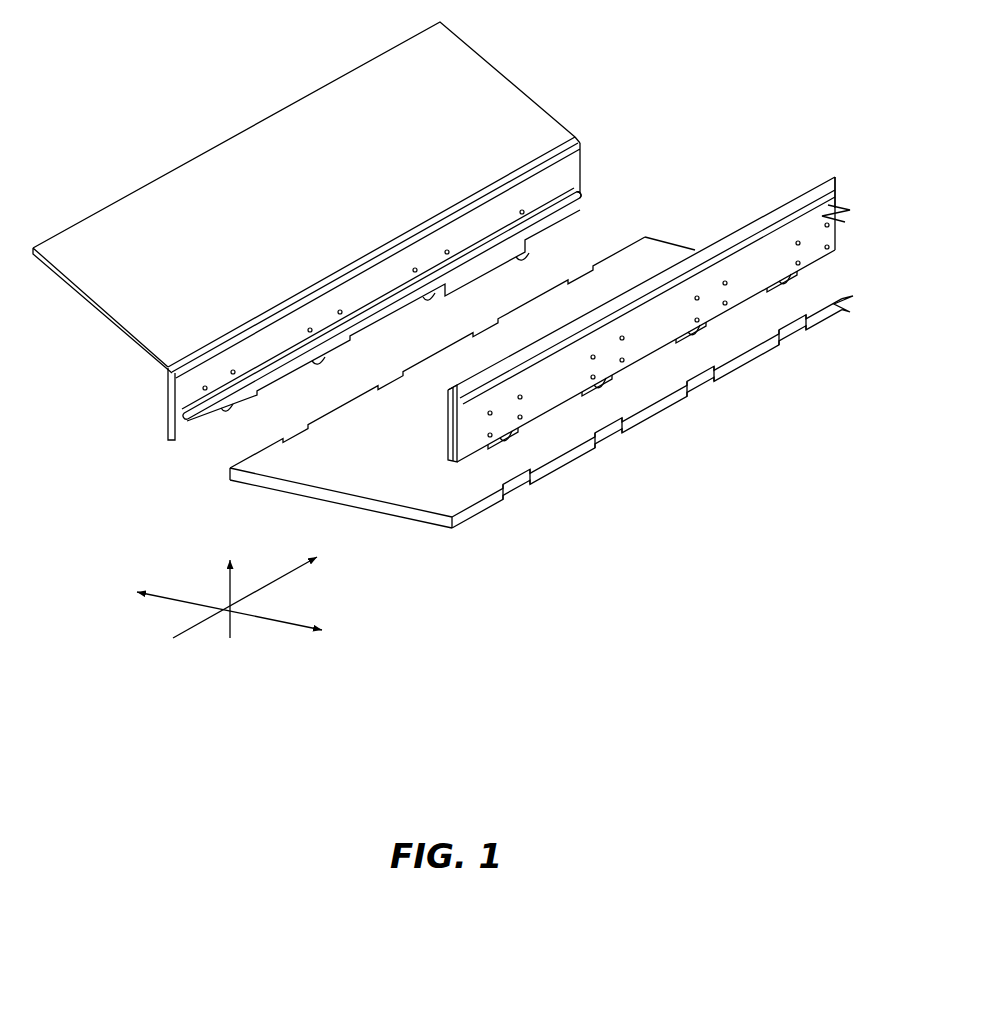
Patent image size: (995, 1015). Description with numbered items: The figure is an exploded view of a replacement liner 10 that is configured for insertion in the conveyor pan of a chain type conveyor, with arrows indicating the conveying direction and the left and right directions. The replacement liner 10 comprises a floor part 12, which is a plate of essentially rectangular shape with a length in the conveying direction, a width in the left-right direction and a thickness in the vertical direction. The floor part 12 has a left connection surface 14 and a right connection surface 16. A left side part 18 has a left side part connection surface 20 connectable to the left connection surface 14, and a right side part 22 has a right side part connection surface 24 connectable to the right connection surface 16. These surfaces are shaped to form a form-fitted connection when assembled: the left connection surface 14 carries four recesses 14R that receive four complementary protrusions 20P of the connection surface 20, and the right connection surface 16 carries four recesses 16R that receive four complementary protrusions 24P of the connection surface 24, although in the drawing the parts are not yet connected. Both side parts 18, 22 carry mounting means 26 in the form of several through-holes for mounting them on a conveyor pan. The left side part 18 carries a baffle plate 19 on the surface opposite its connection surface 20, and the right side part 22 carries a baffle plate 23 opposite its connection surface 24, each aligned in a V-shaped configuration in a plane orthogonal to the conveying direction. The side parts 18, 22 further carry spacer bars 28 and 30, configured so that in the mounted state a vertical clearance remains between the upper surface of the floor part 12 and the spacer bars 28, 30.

The replacement liner 10 is at (585, 92).
The floor part 12 is at (643, 243).
The left connection surface 14 is at (225, 486).
The recess 14R is at (302, 431).
The right connection surface 16 is at (456, 536).
The recess 16R is at (519, 482).
The left side part 18 is at (183, 399).
The baffle plate 19 is at (192, 205).
The left side part connection surface 20 is at (164, 444).
The complementary protrusion 20P is at (242, 411).
The right side part 22 is at (757, 222).
The baffle plate 23 is at (823, 191).
The right side part connection surface 24 is at (464, 468).
The complementary protrusion 24P is at (514, 439).
The mounting means 26 is at (199, 386).
The spacer bar 28 is at (583, 188).
The spacer bar 30 is at (442, 434).